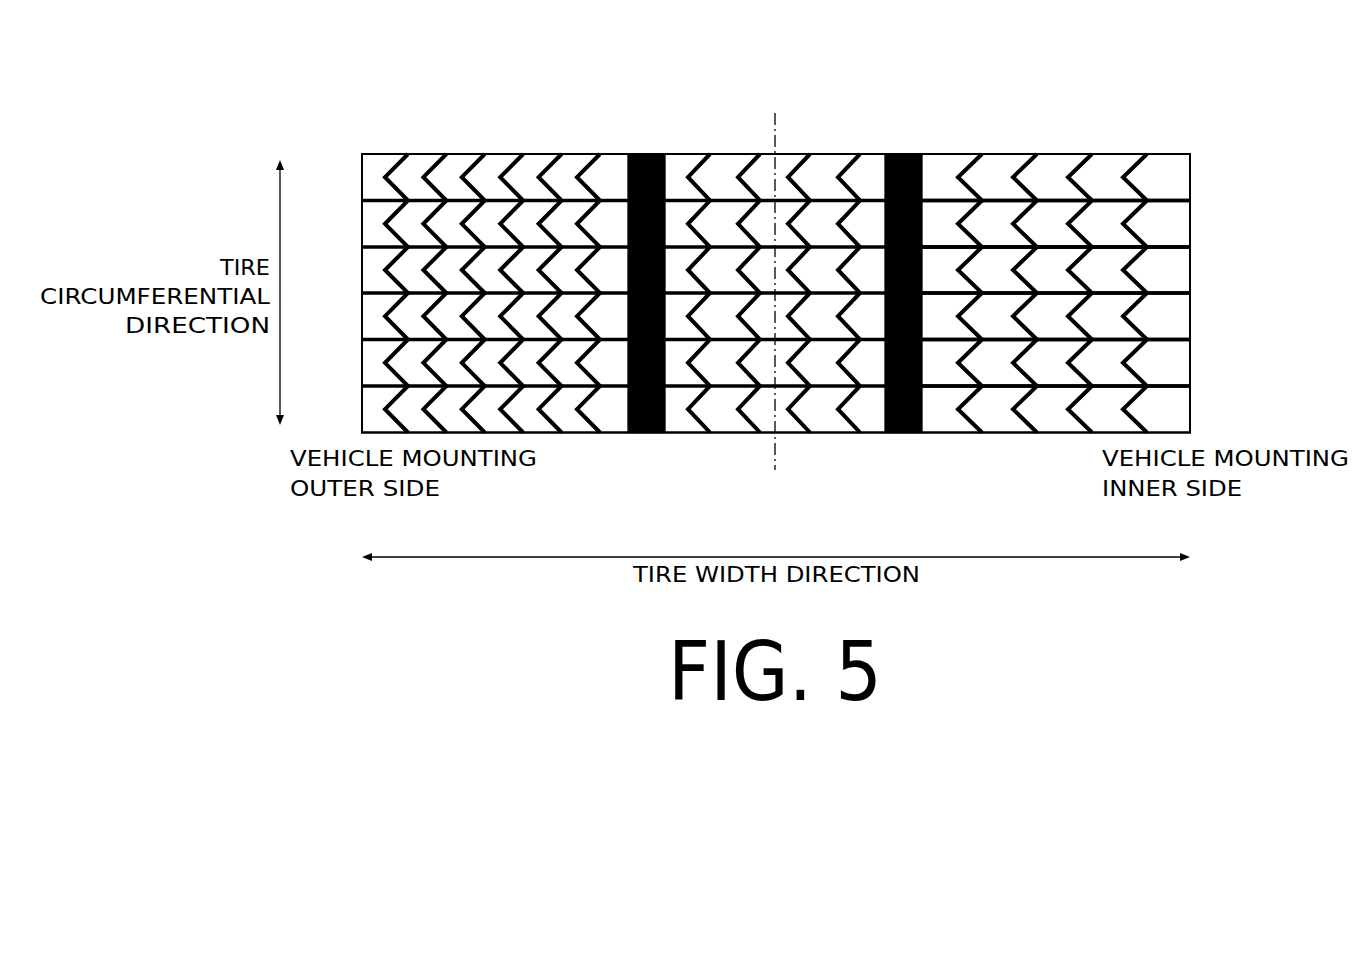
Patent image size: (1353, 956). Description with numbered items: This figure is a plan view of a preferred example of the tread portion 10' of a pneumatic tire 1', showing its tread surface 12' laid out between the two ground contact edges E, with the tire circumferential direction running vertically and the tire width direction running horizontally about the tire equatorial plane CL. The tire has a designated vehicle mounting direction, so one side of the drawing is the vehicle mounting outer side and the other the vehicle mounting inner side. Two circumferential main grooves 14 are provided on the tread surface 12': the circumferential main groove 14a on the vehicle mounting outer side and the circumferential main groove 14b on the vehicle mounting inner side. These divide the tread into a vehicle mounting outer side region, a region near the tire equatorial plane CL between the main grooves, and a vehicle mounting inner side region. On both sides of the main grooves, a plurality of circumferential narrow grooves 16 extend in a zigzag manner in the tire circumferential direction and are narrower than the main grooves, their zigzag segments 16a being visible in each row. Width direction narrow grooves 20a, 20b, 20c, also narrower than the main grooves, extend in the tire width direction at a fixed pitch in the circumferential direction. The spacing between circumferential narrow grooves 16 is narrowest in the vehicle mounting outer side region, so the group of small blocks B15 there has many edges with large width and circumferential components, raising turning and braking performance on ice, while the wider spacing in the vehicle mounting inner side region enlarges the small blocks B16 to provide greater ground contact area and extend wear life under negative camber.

The pneumatic tire 1' is at (776, 241).
The tread portion 10' is at (776, 241).
The tread surface 12' is at (531, 241).
The circumferential main grooves 14 is at (774, 349).
The circumferential main groove on the vehicle mounting outer side 14a is at (645, 436).
The circumferential main groove on the vehicle mounting inner side 14b is at (903, 436).
The circumferential narrow grooves 16 is at (740, 436).
The zigzag sipe 16a is at (388, 408).
The width direction narrow groove 20a is at (1168, 237).
The width direction narrow groove 20b is at (1177, 281).
The width direction narrow groove 20c is at (1170, 345).
The small blocks B15 is at (577, 158).
The small blocks B16 is at (1003, 165).
The ground contact edges E is at (361, 140).
The tire equatorial plane CL is at (776, 278).